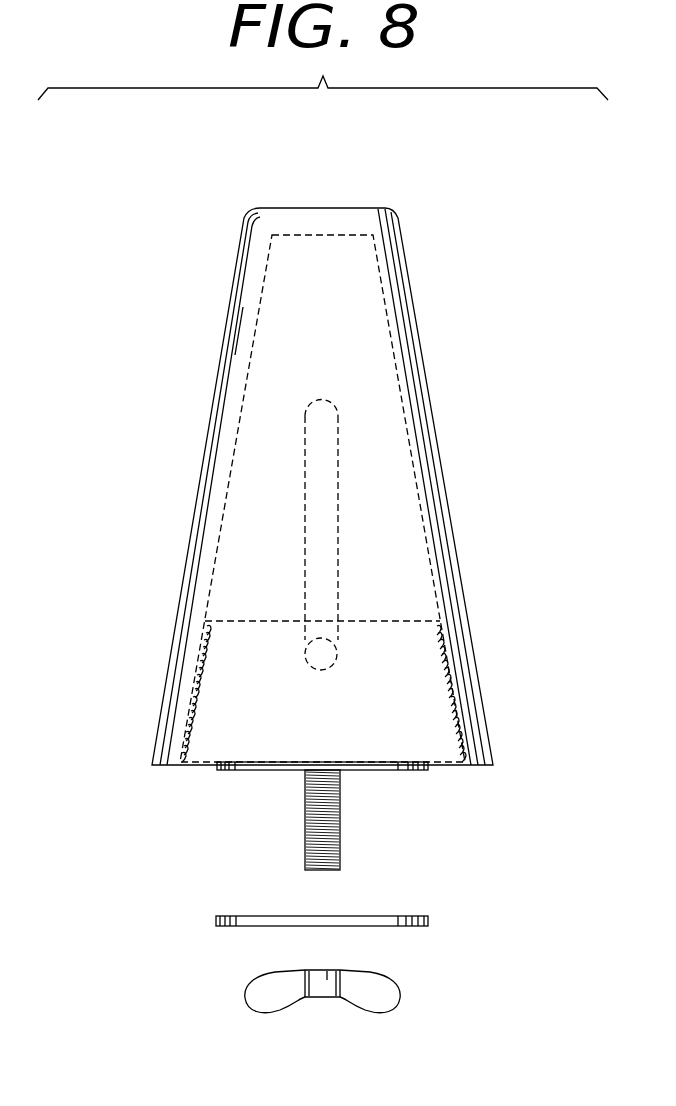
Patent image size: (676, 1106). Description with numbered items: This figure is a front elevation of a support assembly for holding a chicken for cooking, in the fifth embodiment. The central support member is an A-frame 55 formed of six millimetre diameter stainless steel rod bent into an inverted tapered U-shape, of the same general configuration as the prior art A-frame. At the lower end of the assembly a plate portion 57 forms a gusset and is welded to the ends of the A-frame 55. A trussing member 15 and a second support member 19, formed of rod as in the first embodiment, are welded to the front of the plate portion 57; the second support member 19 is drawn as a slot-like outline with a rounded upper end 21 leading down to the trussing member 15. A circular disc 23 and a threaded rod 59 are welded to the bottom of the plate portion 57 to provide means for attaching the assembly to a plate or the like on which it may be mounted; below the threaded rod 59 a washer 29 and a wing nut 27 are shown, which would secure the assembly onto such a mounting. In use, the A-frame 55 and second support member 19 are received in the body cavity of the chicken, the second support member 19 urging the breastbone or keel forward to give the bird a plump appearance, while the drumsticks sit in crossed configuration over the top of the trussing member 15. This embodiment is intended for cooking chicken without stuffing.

The A-frame 55 is at (347, 222).
The plate portion 57 is at (410, 669).
The second support member 19 is at (338, 487).
The slot upper end 21 is at (338, 408).
The trussing member 15 is at (336, 666).
The circular disc 23 is at (428, 768).
The threaded rod 59 is at (342, 813).
The washer 29 is at (430, 920).
The wing nut 27 is at (388, 1013).